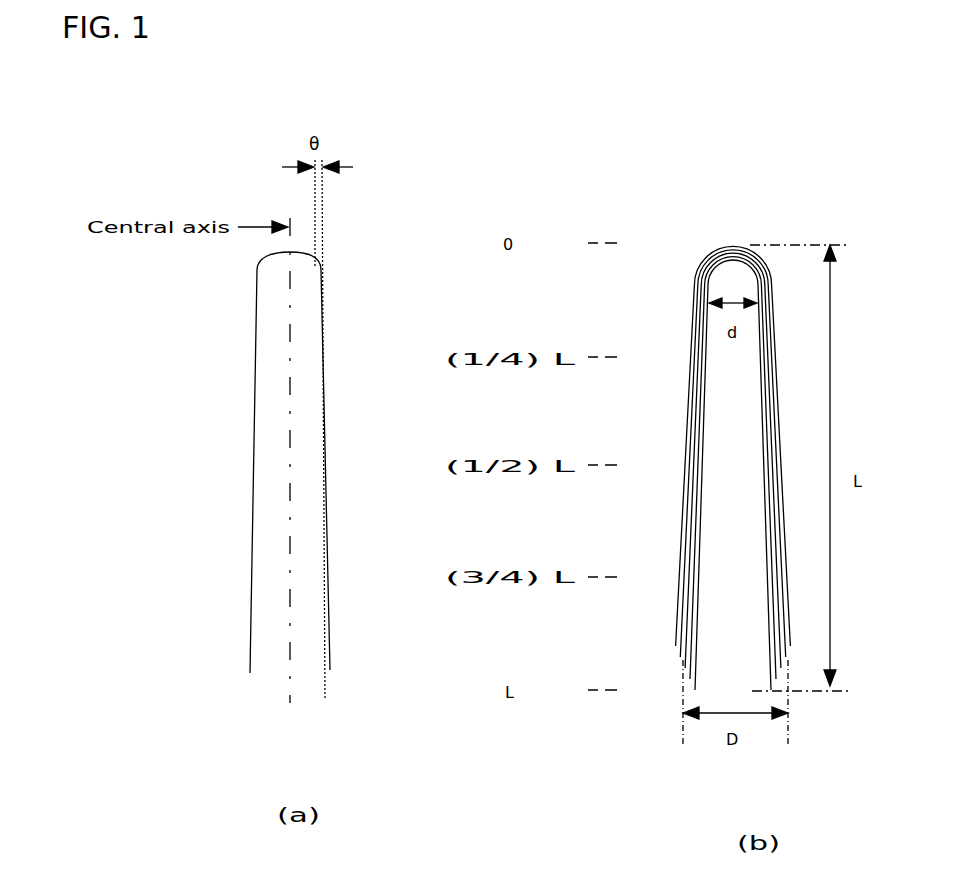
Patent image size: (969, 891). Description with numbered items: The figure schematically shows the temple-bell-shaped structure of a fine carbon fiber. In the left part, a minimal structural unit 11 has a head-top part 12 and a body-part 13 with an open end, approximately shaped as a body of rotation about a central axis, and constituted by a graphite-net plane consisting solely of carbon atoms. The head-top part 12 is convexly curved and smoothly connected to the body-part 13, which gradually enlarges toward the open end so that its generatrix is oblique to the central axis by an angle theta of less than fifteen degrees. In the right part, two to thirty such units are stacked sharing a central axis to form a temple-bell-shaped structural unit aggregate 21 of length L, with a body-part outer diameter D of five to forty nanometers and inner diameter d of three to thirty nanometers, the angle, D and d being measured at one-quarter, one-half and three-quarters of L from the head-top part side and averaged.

The structural unit 11 is at (202, 431).
The head-top part 12 is at (266, 263).
The body-part 13 is at (257, 352).
The temple-bell-shaped structural unit aggregate 21 is at (655, 220).